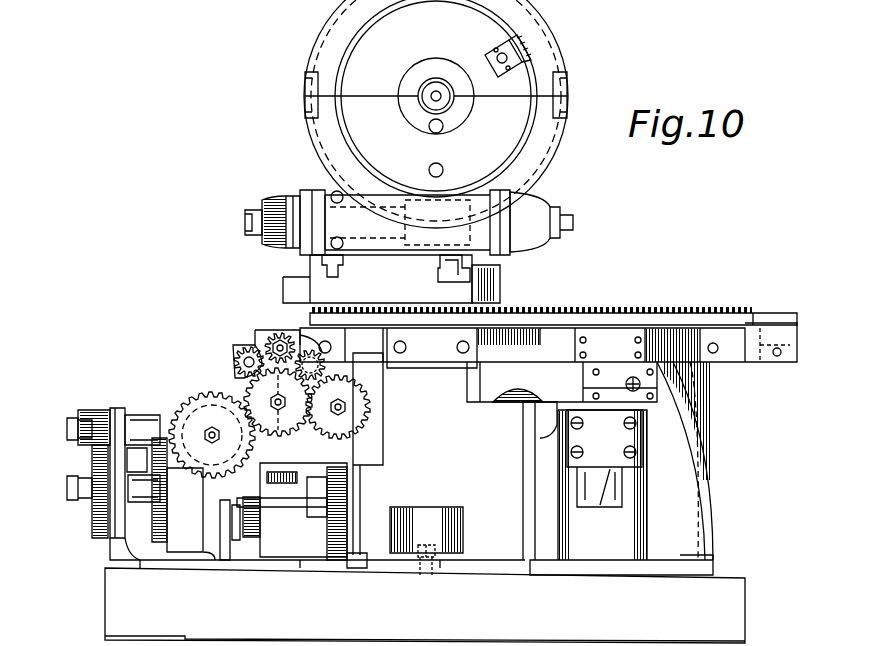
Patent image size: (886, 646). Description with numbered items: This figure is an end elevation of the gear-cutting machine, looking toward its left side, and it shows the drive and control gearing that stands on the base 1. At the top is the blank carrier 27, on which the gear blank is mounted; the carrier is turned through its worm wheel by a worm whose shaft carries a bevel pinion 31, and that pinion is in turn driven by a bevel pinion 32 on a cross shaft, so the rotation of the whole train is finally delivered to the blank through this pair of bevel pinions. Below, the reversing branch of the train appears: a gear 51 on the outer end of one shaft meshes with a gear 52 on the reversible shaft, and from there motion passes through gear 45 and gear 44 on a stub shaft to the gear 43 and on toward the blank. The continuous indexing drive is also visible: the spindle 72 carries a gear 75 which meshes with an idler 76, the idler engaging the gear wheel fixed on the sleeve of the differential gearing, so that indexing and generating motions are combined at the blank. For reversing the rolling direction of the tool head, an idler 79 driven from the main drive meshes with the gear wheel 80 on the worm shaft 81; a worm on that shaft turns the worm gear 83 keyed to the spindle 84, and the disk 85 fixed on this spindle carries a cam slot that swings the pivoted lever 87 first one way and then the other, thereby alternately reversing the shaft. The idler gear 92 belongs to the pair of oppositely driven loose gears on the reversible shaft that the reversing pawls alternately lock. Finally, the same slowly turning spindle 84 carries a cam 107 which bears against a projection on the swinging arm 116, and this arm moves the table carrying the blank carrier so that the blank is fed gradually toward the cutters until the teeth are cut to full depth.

The base 1 is at (425, 605).
The blank carrier 27 is at (440, 82).
The bevel pinion 31 is at (302, 200).
The bevel pinion 32 is at (278, 204).
The gear 43 is at (97, 508).
The gear 44 is at (106, 412).
The gear 45 is at (86, 412).
The gear 51 is at (200, 420).
The gear 52 is at (299, 424).
The spindle 72 is at (226, 530).
The gear 75 is at (160, 438).
The idler 76 is at (270, 340).
The idler 79 is at (305, 350).
The gear wheel 80 is at (362, 415).
The worm shaft 81 is at (344, 406).
The worm gear 83 is at (345, 522).
The spindle 84 is at (282, 483).
The disk 85 is at (235, 528).
The lever 87 is at (233, 515).
The idler gear 92 is at (240, 356).
The cam 107 is at (598, 498).
The swinging arm 116 is at (562, 382).